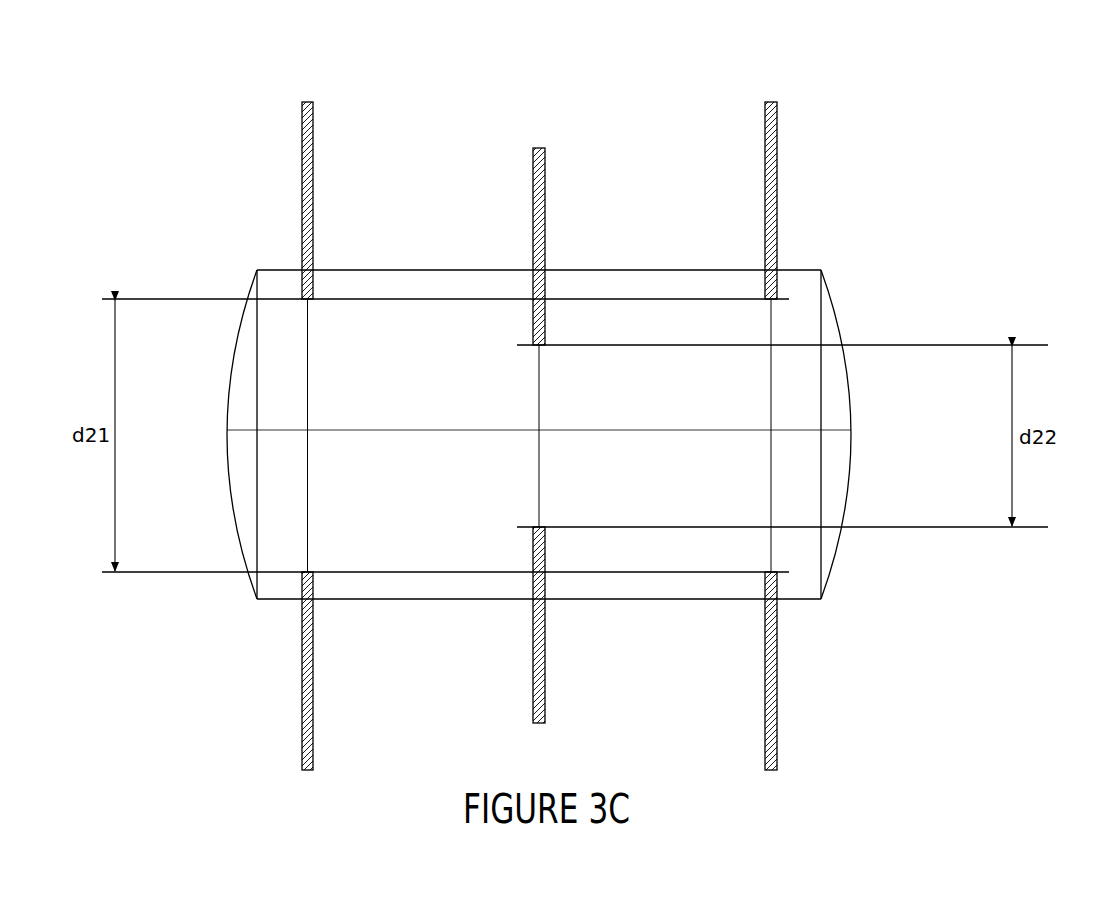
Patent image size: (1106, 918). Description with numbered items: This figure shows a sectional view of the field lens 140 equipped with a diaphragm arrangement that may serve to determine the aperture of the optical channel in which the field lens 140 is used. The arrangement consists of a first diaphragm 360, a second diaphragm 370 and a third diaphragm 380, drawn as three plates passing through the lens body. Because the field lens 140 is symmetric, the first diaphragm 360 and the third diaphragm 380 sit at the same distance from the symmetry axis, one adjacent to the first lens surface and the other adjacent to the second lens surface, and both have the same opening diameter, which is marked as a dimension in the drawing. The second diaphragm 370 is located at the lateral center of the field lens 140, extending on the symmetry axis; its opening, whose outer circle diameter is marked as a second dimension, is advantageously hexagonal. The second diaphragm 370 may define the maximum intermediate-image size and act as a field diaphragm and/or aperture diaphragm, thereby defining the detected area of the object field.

The field lens 140 is at (868, 210).
The first diaphragm 360 is at (313, 101).
The second diaphragm 370 is at (545, 148).
The third diaphragm 380 is at (777, 101).